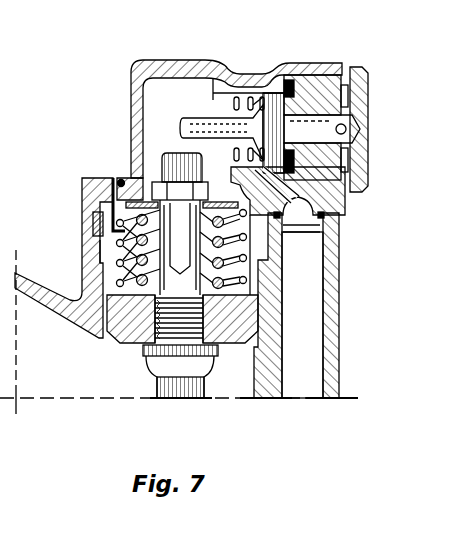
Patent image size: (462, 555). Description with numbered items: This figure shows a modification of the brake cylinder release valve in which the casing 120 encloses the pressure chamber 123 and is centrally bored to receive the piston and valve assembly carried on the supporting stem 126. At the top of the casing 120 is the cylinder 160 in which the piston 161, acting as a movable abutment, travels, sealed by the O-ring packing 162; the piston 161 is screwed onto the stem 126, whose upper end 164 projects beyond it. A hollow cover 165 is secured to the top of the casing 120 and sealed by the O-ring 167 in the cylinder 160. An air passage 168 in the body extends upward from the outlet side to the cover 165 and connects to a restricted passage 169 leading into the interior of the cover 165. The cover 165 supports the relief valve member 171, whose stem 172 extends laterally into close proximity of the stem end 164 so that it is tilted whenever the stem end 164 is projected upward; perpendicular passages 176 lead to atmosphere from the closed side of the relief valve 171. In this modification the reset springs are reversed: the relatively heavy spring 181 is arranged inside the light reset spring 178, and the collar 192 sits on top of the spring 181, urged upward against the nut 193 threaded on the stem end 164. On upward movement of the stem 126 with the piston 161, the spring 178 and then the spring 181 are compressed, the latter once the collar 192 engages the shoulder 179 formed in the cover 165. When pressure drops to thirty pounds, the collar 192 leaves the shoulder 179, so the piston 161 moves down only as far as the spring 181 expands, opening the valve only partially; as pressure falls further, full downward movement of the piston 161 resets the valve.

The casing 120 is at (343, 362).
The pressure chamber 123 is at (153, 332).
The supporting stem 126 is at (178, 385).
The cylinder 160 is at (251, 268).
The piston 161 is at (133, 339).
The O-ring packing 162 is at (264, 317).
The upper end of stem 164 is at (92, 205).
The hollow cover 165 is at (143, 75).
The O-ring 167 is at (96, 223).
The air passage 168 is at (305, 292).
The restricted passage 169 is at (280, 186).
The relief valve member 171 is at (278, 103).
The stem of relief valve 172 is at (200, 120).
The perpendicular passages 176 is at (345, 90).
The light reset spring 178 is at (117, 281).
The shoulder 179 is at (135, 176).
The heavy spring 181 is at (102, 262).
The collar 192 is at (108, 180).
The nut 193 is at (185, 190).